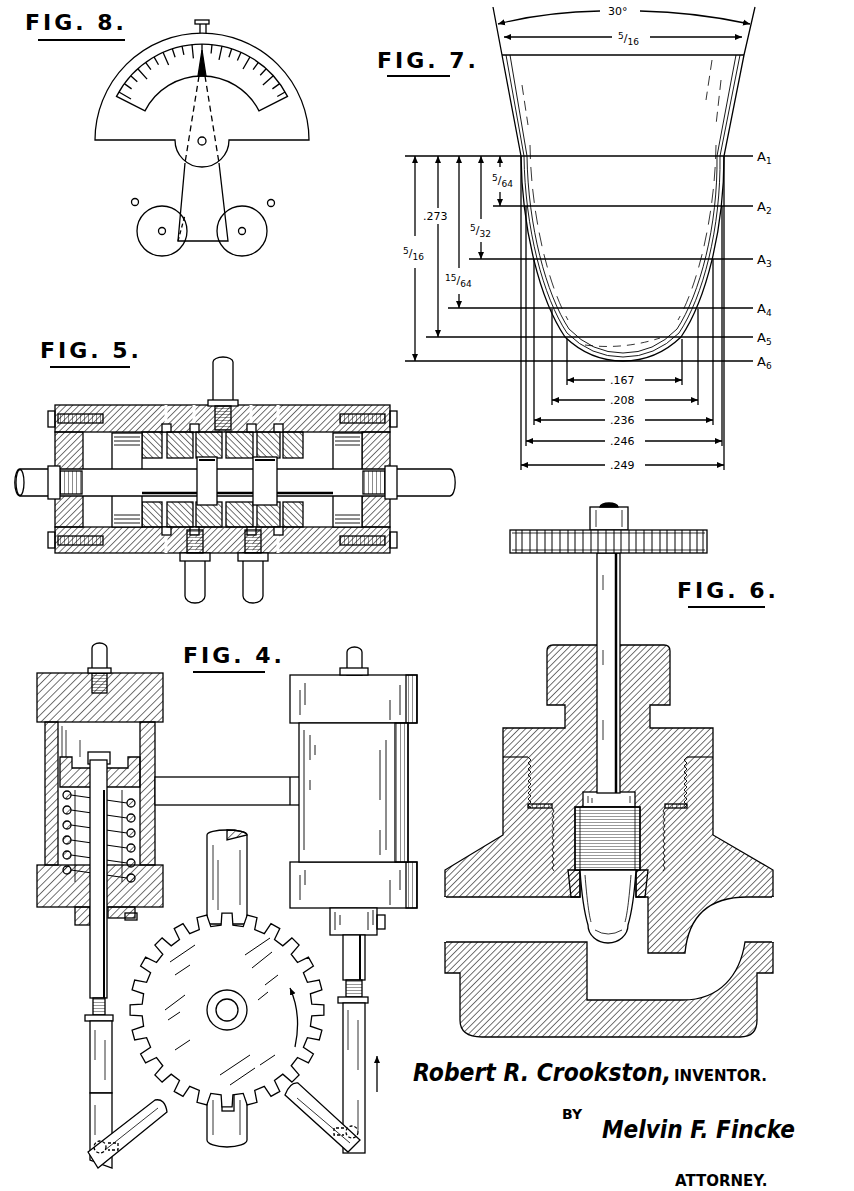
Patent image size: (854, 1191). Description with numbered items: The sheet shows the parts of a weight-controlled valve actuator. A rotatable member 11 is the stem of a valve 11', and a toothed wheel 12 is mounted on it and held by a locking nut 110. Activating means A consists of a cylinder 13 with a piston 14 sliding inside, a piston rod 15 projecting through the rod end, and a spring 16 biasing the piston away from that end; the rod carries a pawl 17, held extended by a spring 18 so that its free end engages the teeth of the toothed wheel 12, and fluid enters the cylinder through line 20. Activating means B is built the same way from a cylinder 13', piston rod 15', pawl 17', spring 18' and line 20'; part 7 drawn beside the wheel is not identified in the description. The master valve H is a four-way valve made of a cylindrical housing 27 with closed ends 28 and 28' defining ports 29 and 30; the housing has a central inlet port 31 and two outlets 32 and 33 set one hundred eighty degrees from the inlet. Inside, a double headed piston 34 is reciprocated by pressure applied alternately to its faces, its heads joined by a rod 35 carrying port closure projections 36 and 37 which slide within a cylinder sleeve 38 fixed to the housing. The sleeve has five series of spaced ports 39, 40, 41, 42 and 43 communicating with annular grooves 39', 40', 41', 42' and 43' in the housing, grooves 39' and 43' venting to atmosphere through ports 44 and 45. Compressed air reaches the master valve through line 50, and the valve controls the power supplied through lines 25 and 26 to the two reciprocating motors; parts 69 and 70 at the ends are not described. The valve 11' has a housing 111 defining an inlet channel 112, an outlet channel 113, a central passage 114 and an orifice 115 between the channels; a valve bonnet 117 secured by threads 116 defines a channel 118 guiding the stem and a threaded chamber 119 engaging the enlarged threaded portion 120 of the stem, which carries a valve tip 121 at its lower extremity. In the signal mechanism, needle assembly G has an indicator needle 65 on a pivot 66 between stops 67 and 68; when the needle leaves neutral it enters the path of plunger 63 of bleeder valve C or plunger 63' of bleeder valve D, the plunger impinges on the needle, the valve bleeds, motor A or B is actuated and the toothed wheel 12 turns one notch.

In FIG. 8, the indicator needle 65 is at (207, 62).
In FIG. 8, the pivot 66 is at (199, 143).
In FIG. 8, the needle assembly G is at (214, 188).
In FIG. 8, the bleeder valve D is at (145, 230).
In FIG. 8, the bleeder valve C is at (265, 230).
In FIG. 8, the plunger 63 is at (253, 246).
In FIG. 8, the plunger 63' is at (152, 246).
In FIG. 8, the stop 67 is at (274, 202).
In FIG. 8, the stop 68 is at (133, 201).
In FIG. 7, the valve tip 121 is at (578, 181).
In FIG. 6, the valve tip 121 is at (608, 918).
In FIG. 5, the master valve H is at (340, 405).
In FIG. 5, the cylindrical housing 27 is at (118, 412).
In FIG. 5, the closed end 28 is at (386, 474).
In FIG. 5, the closed end 28' is at (64, 465).
In FIG. 5, the port 29 is at (372, 480).
In FIG. 5, the port 30 is at (72, 478).
In FIG. 5, the inlet port 31 is at (236, 410).
In FIG. 5, the outlet 32 is at (190, 542).
In FIG. 5, the outlet 33 is at (250, 542).
In FIG. 5, the double headed piston 34 is at (128, 500).
In FIG. 5, the rod 35 is at (312, 482).
In FIG. 5, the port closure projection 36 is at (262, 492).
In FIG. 5, the port closure projection 37 is at (205, 490).
In FIG. 5, the cylinder sleeve 38 is at (155, 518).
In FIG. 5, the series of spaced ports 39 is at (153, 455).
In FIG. 5, the annular groove 39' is at (145, 406).
In FIG. 5, the series of spaced ports 40 is at (178, 468).
In FIG. 5, the annular groove 40' is at (201, 420).
In FIG. 5, the series of spaced ports 41 is at (235, 468).
In FIG. 5, the annular groove 41' is at (248, 420).
In FIG. 5, the series of spaced ports 42 is at (280, 467).
In FIG. 5, the annular groove 42' is at (275, 417).
In FIG. 5, the series of spaced ports 43 is at (307, 453).
In FIG. 5, the annular groove 43' is at (308, 420).
In FIG. 5, the port 44 is at (168, 424).
In FIG. 5, the port 45 is at (280, 424).
In FIG. 5, the line 50 is at (226, 374).
In FIG. 5, the line 25 is at (253, 590).
In FIG. 5, the line 26 is at (190, 590).
In FIG. 5, the valve stem 69 is at (422, 488).
In FIG. 5, the valve stem 70 is at (35, 486).
In FIG. 4, the activating means A is at (60, 683).
In FIG. 4, the activating means B is at (395, 690).
In FIG. 4, the shaft 7 is at (220, 853).
In FIG. 4, the rotatable member 11 is at (225, 991).
In FIG. 6, the rotatable member 11 is at (584, 673).
In FIG. 6, the valve 11' is at (738, 721).
In FIG. 4, the toothed wheel 12 is at (203, 1068).
In FIG. 6, the toothed wheel 12 is at (683, 533).
In FIG. 4, the cylinder 13 is at (84, 793).
In FIG. 4, the cylinder 13' is at (332, 792).
In FIG. 4, the piston 14 is at (122, 763).
In FIG. 4, the piston rod 15 is at (74, 964).
In FIG. 4, the piston rod 15' is at (375, 1044).
In FIG. 4, the spring 16 is at (68, 823).
In FIG. 4, the pawl 17 is at (127, 1141).
In FIG. 4, the pawl 17' is at (313, 1122).
In FIG. 4, the spring 18 is at (83, 1157).
In FIG. 4, the spring 18' is at (330, 1153).
In FIG. 4, the line 20 is at (115, 667).
In FIG. 4, the line 20' is at (335, 652).
In FIG. 6, the locking nut 110 is at (611, 522).
In FIG. 6, the housing 111 is at (503, 980).
In FIG. 6, the inlet channel 112 is at (758, 923).
In FIG. 6, the outlet channel 113 is at (455, 913).
In FIG. 6, the central passage 114 is at (573, 884).
In FIG. 6, the orifice 115 is at (603, 948).
In FIG. 6, the threads 116 is at (514, 776).
In FIG. 6, the valve bonnet 117 is at (550, 752).
In FIG. 6, the channel 118 is at (596, 706).
In FIG. 6, the threaded chamber 119 is at (663, 835).
In FIG. 6, the enlarged threaded portion 120 is at (600, 836).